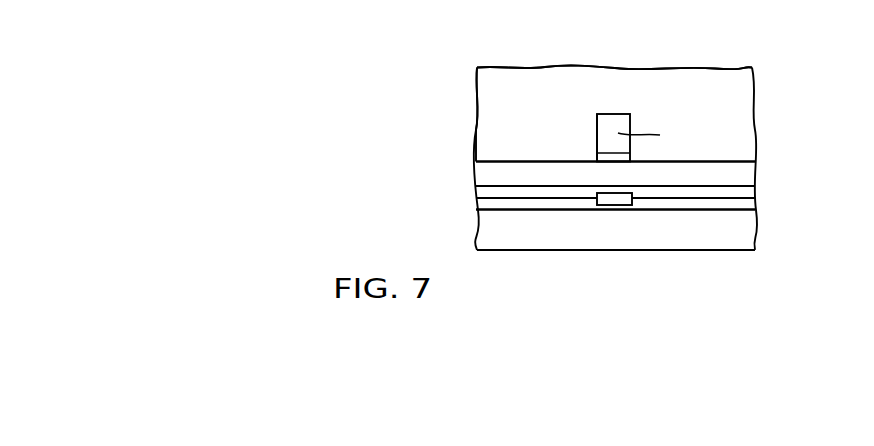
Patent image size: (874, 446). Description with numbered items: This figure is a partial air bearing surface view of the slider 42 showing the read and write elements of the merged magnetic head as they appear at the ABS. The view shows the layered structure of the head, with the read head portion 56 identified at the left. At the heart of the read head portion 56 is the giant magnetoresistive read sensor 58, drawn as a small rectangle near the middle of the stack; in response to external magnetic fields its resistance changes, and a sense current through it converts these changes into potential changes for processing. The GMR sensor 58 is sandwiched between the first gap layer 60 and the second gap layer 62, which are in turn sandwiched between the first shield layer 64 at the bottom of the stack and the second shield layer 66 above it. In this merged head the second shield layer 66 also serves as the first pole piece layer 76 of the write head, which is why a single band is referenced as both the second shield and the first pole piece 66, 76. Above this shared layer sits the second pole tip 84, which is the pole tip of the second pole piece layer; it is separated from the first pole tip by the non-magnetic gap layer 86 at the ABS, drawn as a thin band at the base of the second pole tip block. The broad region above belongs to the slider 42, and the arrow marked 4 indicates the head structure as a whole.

The magnetic head 4 is at (785, 75).
The slider 42 is at (485, 88).
The read head portion 56 is at (216, 24).
The giant magnetoresistive read sensor 58 is at (613, 200).
The first gap layer 60 is at (510, 210).
The second gap layer 62 is at (720, 195).
The first shield layer 64 is at (738, 230).
The second shield layer 66 is at (483, 175).
The first pole piece layer 76 is at (615, 174).
The second pole tip 84 is at (618, 115).
The non-magnetic gap layer 86 is at (605, 155).